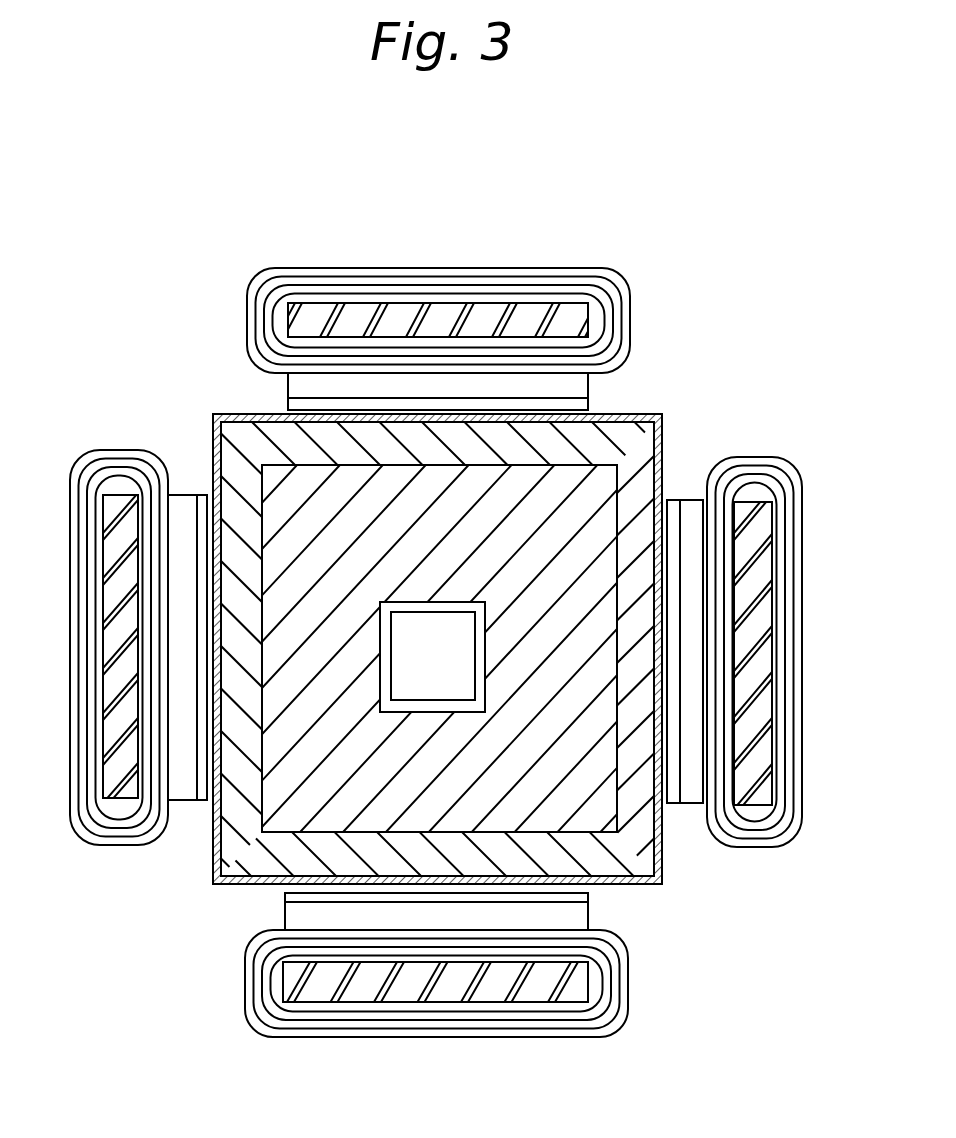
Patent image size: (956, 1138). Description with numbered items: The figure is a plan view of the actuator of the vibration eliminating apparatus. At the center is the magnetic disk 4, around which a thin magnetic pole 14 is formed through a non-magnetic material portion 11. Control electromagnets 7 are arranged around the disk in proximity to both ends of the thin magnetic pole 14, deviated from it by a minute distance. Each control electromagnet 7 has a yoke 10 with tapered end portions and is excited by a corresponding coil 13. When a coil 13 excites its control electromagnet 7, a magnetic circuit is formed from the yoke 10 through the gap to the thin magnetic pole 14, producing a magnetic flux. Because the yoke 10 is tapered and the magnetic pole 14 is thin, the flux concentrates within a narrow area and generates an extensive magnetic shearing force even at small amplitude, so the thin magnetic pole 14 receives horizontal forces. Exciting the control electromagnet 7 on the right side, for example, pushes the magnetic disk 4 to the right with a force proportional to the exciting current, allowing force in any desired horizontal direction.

The magnetic disk 4 is at (634, 418).
The control electromagnet 7 is at (571, 268).
The yoke 10 is at (672, 807).
The non-magnetic material portion 11 is at (212, 857).
The coil 13 is at (758, 847).
The thin magnetic pole 14 is at (663, 886).